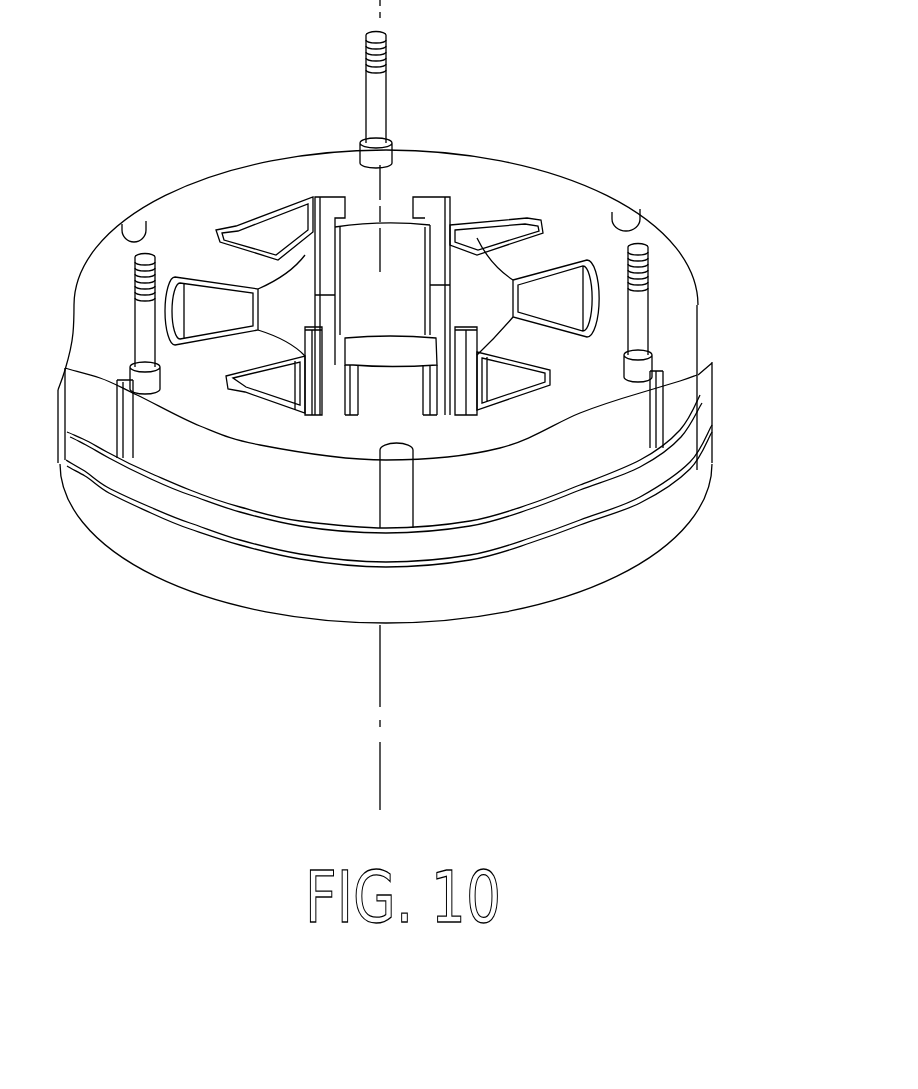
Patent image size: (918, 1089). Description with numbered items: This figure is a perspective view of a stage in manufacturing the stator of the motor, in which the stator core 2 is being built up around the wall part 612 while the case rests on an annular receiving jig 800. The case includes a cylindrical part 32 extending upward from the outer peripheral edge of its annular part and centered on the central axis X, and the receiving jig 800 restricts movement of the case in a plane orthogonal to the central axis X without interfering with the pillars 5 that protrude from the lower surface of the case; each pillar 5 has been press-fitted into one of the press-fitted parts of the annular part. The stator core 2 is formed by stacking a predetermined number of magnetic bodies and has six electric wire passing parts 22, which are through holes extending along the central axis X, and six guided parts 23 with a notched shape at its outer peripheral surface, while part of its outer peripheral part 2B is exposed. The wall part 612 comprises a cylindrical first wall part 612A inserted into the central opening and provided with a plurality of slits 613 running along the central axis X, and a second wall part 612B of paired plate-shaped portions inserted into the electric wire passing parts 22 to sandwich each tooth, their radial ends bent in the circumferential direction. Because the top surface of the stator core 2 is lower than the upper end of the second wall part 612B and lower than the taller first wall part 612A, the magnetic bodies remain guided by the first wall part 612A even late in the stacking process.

The stator core 2 is at (473, 177).
The outer peripheral part 2B is at (578, 468).
The pillar 5 is at (364, 45).
The electric wire passing part 22 is at (276, 398).
The guided part 23 is at (362, 140).
The cylindrical part 32 is at (682, 443).
The wall part 612 is at (400, 245).
The first wall part 612A is at (472, 268).
The second wall part 612B is at (233, 388).
The slit 613 is at (445, 262).
The receiving jig 800 is at (660, 518).
The central axis X is at (381, 757).